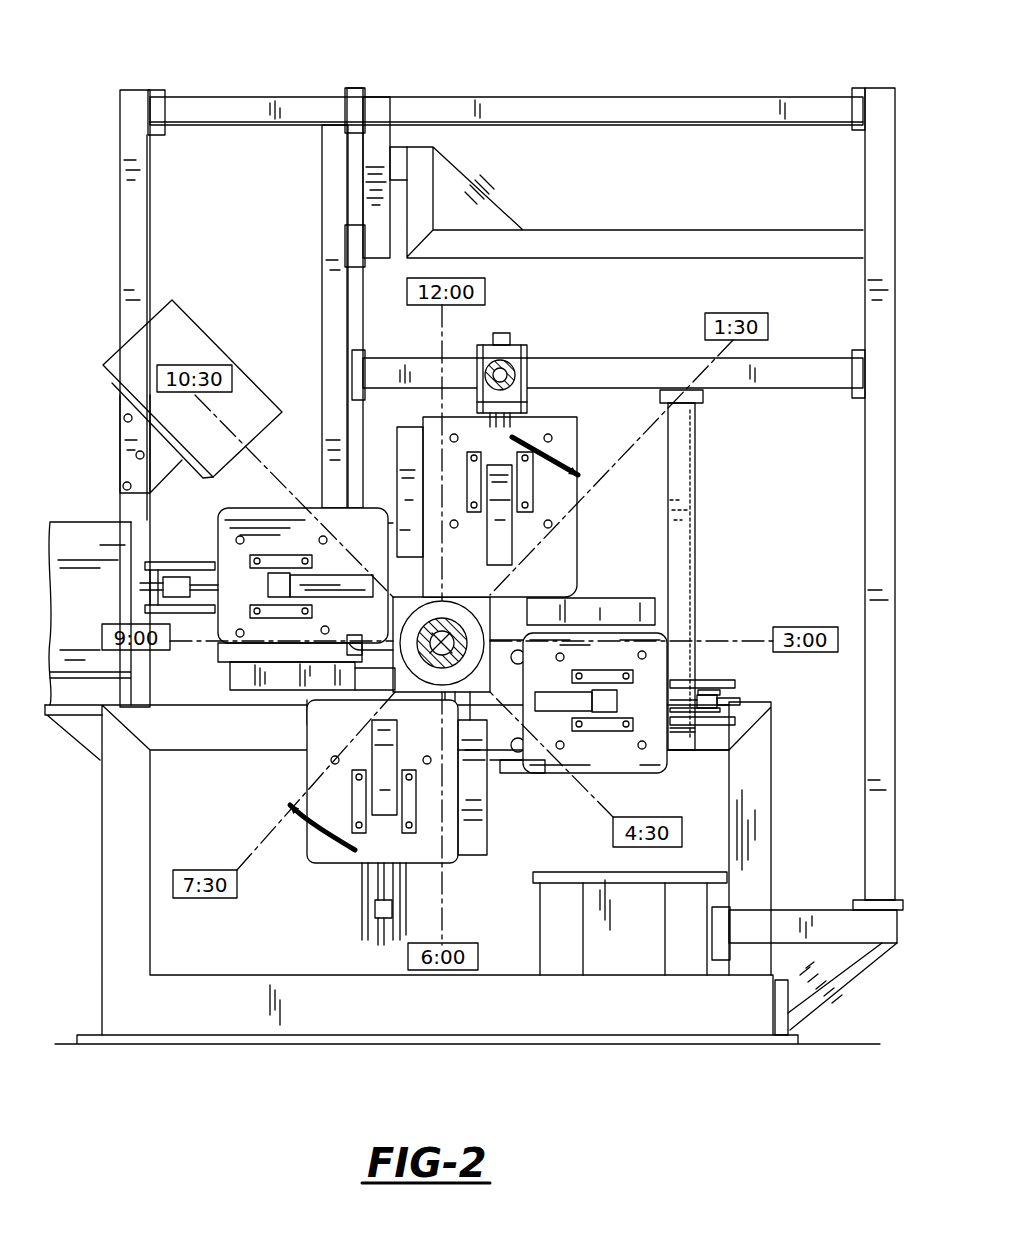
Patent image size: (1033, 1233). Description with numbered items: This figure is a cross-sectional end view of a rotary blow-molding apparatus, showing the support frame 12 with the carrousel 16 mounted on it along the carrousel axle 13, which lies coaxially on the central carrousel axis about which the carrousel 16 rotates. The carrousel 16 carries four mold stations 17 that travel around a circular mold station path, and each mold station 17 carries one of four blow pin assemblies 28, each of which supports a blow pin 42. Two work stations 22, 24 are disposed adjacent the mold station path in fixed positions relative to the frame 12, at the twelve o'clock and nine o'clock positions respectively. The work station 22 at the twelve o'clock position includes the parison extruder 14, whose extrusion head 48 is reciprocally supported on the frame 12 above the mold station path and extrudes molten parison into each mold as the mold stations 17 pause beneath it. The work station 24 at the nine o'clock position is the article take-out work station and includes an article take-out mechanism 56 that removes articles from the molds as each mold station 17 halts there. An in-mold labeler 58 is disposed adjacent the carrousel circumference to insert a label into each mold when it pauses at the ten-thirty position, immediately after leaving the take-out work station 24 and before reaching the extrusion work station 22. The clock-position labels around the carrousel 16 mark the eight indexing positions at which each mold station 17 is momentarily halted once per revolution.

The support frame 12 is at (770, 97).
The carrousel axle 13 is at (418, 655).
The parison extruder 14 is at (522, 352).
The carrousel 16 is at (670, 633).
The mold station 17 is at (298, 545).
The work station 22 is at (530, 300).
The work station 24 is at (128, 560).
The blow pin assembly 28 is at (562, 400).
The blow pin 42 is at (500, 415).
The extrusion head 48 is at (515, 393).
The article take-out mechanism 56 is at (82, 692).
The in-mold labeler 58 is at (215, 335).